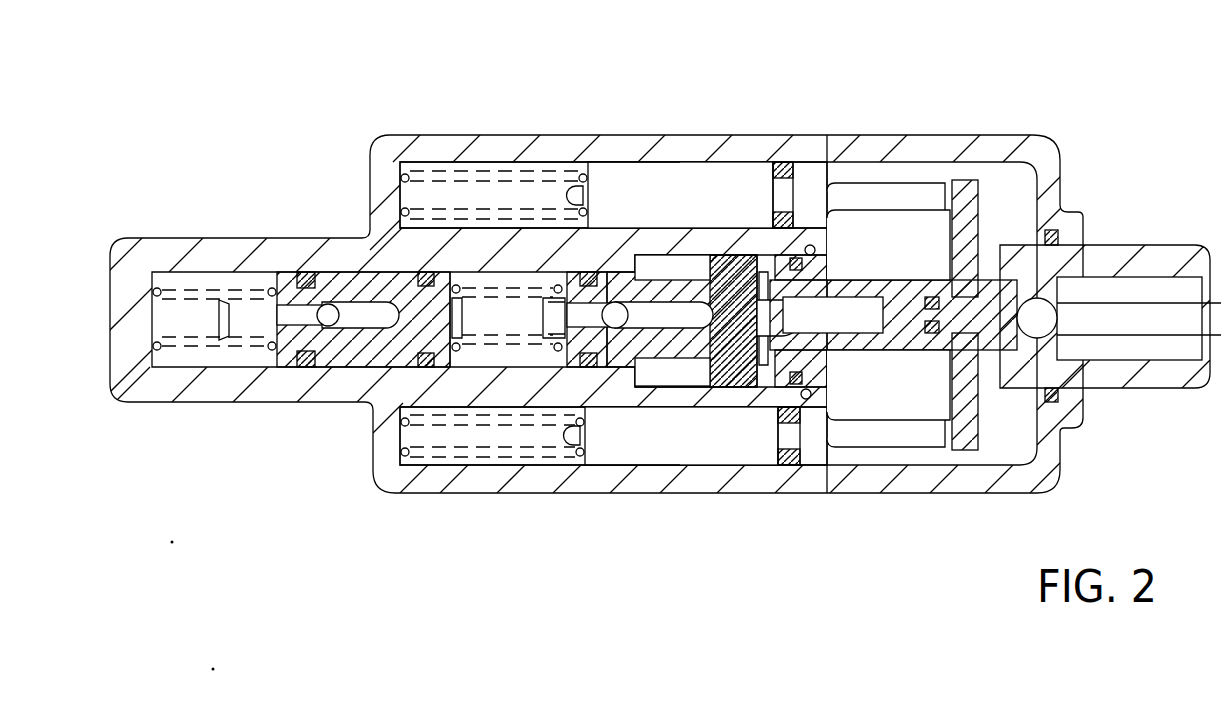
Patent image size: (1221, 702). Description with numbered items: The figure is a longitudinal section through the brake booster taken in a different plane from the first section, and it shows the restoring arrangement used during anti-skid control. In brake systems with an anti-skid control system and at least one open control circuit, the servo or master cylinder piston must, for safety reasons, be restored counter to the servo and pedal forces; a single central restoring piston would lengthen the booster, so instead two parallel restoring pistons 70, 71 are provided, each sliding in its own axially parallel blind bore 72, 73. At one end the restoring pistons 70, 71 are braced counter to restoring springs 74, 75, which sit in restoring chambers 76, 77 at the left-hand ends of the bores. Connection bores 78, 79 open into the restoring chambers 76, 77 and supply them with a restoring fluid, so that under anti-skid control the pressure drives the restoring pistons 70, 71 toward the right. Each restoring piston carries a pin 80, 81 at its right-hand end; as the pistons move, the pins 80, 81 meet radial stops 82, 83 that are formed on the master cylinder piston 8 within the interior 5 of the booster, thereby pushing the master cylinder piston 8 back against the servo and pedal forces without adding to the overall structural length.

The interior 5 is at (1052, 470).
The master cylinder piston 8 is at (851, 360).
The restoring piston 70 is at (728, 182).
The restoring piston 71 is at (712, 450).
The blind bore 72 is at (636, 160).
The blind bore 73 is at (592, 468).
The restoring spring 74 is at (505, 182).
The restoring spring 75 is at (495, 450).
The restoring chamber 76 is at (465, 160).
The restoring chamber 77 is at (445, 462).
The connection bore 78 is at (400, 138).
The connection bore 79 is at (403, 490).
The pin 80 is at (910, 185).
The pin 81 is at (892, 440).
The radial stop 82 is at (965, 203).
The radial stop 83 is at (970, 450).